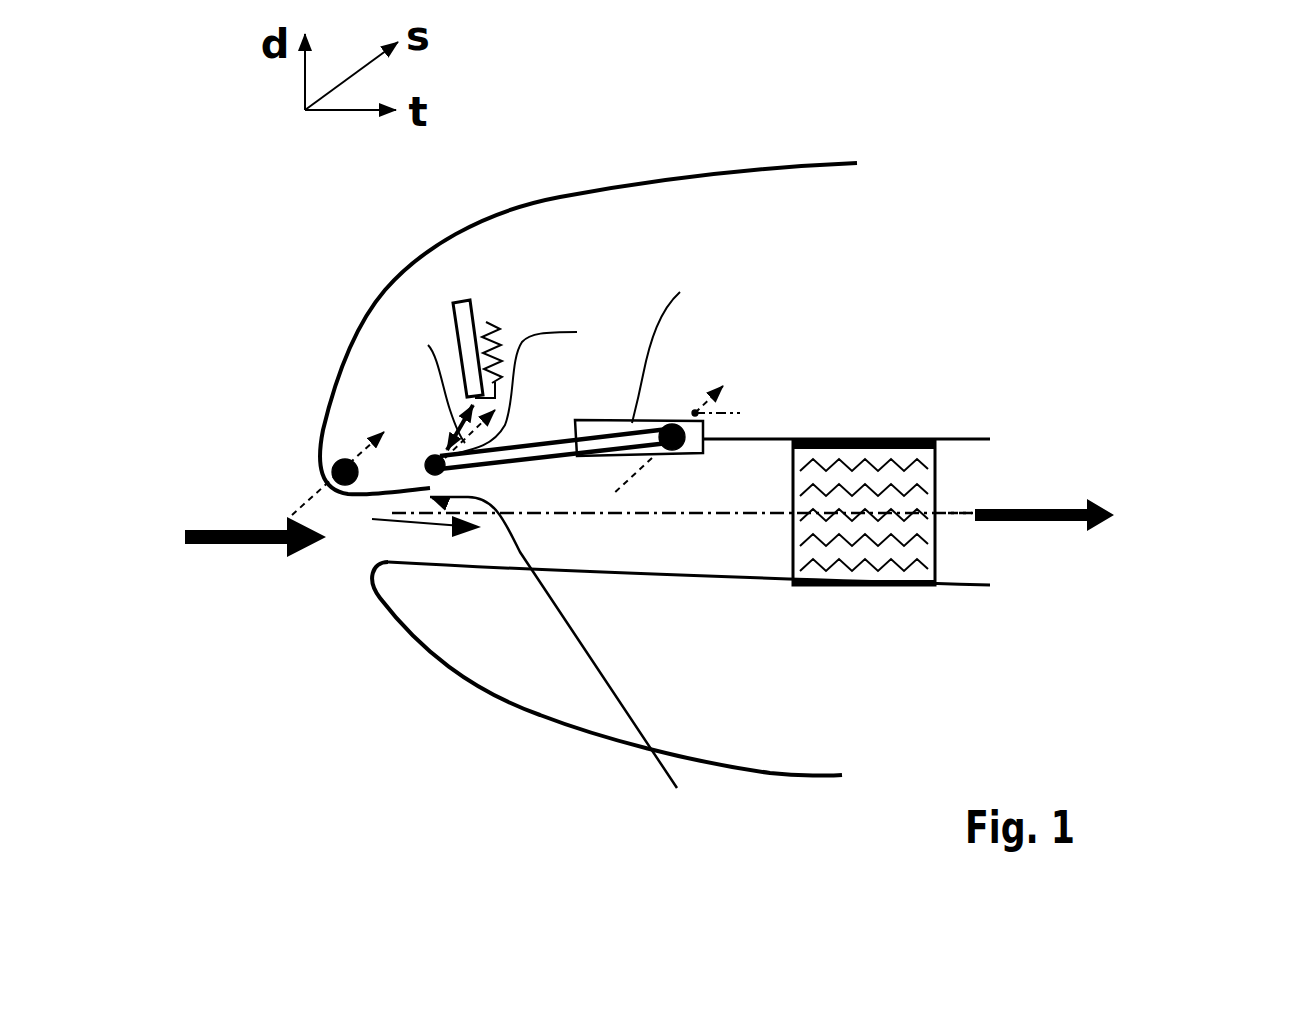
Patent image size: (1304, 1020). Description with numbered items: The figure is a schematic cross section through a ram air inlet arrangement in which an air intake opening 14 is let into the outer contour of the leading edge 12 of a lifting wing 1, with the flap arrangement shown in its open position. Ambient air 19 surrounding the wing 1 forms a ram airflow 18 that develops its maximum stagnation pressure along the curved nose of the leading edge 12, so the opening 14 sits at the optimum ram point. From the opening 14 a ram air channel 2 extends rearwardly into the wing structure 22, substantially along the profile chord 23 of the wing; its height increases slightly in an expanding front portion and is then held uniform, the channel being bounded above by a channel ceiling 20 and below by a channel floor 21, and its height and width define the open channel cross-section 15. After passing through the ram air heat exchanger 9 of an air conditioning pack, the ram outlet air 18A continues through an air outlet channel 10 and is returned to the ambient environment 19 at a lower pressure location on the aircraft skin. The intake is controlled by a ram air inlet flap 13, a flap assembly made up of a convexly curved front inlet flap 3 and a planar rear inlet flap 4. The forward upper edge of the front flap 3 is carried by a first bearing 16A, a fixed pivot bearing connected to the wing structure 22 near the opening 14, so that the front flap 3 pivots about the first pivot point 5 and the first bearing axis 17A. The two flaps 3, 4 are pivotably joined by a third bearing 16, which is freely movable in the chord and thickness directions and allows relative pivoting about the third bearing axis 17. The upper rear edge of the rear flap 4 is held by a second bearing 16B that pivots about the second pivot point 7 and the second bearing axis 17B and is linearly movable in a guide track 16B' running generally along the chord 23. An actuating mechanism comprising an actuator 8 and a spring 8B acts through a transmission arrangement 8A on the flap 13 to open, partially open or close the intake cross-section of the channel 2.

The lifting wing 1 is at (436, 238).
The ram air channel 2 is at (496, 536).
The front inlet flap 3 is at (391, 492).
The rear inlet flap 4 is at (605, 440).
The first pivot point 5 is at (350, 462).
The second pivot point 7 is at (671, 426).
The actuator 8 is at (475, 318).
The transmission arrangement 8A is at (432, 382).
The spring 8B is at (488, 322).
The ram air heat exchanger 9 is at (932, 439).
The air outlet channel 10 is at (994, 545).
The leading edge 12 is at (318, 478).
The ram air inlet flap 13 is at (567, 464).
The air intake opening 14 is at (351, 541).
The open channel cross-section 15 is at (744, 522).
The third bearing 16 is at (489, 446).
The first bearing 16A is at (326, 459).
The second bearing 16B is at (719, 362).
The guide track 16B' is at (690, 343).
The third bearing axis 17 is at (527, 391).
The first bearing axis 17A is at (358, 438).
The second bearing axis 17B is at (738, 407).
The ram airflow 18 is at (200, 543).
The ram outlet air 18A is at (1031, 475).
The ambient air 19 is at (341, 325).
The channel ceiling 20 is at (699, 457).
The channel floor 21 is at (564, 571).
The wing structure 22 is at (635, 315).
The profile chord 23 is at (773, 513).